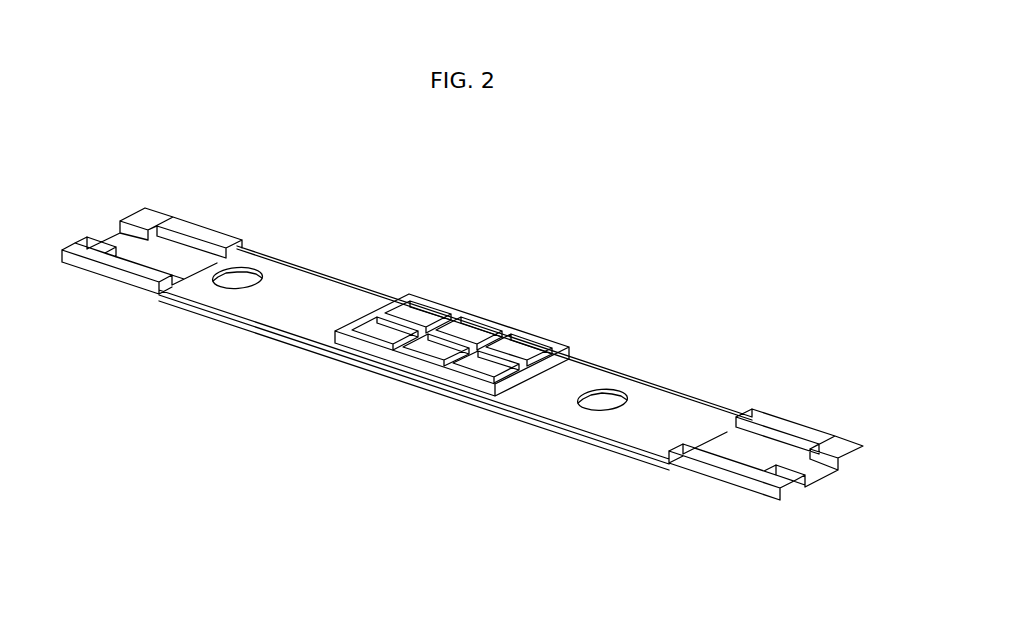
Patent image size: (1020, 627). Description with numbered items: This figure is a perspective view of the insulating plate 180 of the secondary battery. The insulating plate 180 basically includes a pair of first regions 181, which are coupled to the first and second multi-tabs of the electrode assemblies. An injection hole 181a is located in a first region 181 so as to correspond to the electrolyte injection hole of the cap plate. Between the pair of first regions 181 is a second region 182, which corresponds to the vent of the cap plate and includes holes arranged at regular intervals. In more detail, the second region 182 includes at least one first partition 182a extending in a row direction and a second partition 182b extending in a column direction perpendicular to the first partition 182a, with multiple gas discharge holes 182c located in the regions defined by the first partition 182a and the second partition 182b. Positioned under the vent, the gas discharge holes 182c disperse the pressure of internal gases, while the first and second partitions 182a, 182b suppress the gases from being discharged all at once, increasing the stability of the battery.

The insulating plate 180 is at (462, 346).
The first region 181 is at (303, 285).
The injection hole 181a is at (628, 400).
The second region 182 is at (452, 357).
The first partition 182a is at (410, 380).
The second partition 182b is at (470, 370).
The gas discharge holes 182c is at (496, 322).